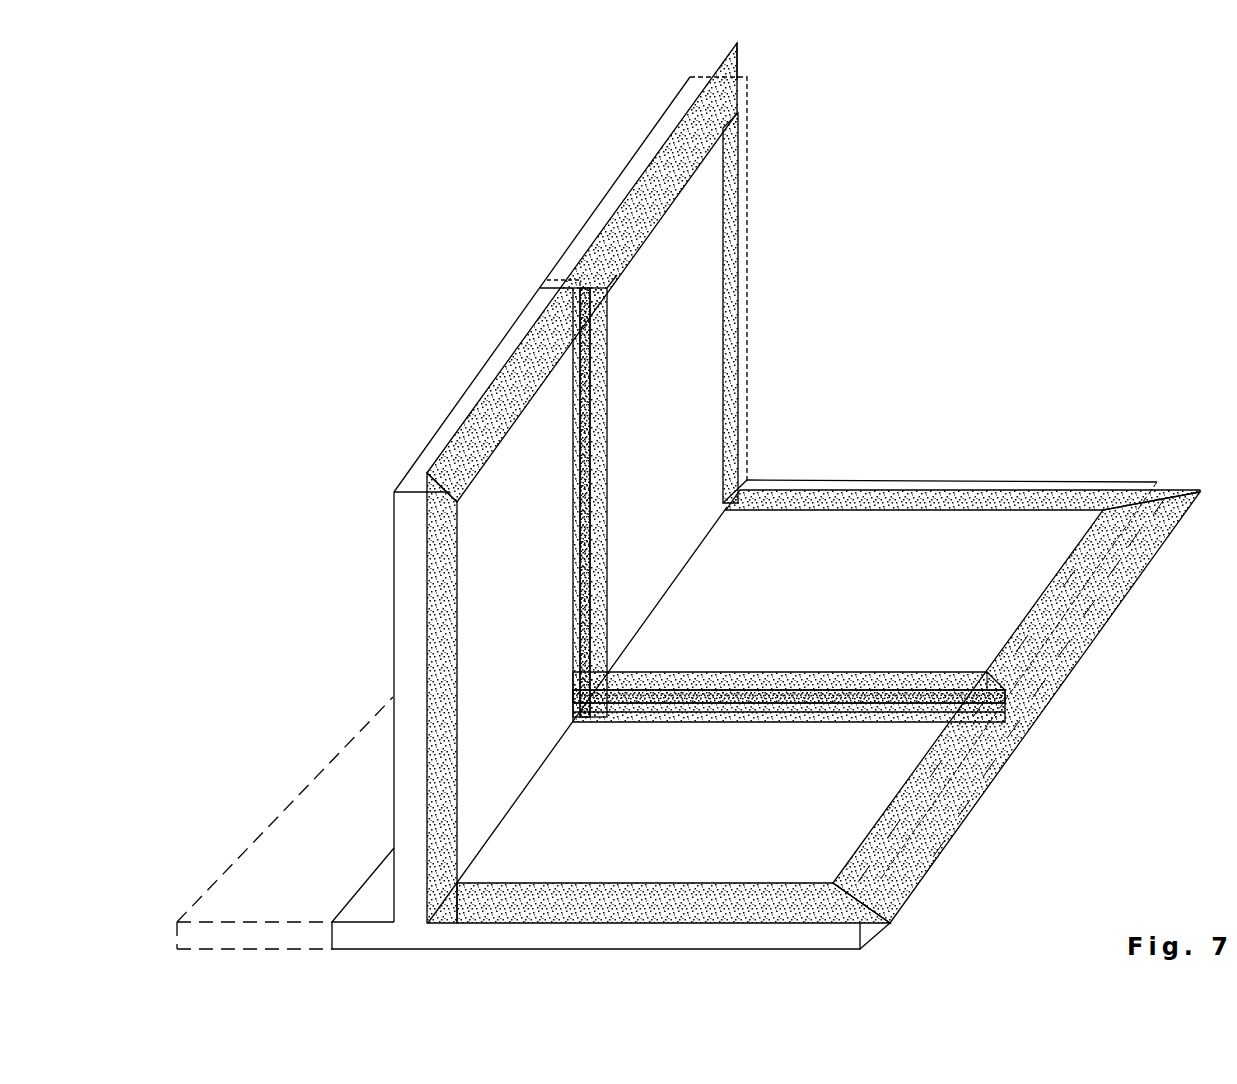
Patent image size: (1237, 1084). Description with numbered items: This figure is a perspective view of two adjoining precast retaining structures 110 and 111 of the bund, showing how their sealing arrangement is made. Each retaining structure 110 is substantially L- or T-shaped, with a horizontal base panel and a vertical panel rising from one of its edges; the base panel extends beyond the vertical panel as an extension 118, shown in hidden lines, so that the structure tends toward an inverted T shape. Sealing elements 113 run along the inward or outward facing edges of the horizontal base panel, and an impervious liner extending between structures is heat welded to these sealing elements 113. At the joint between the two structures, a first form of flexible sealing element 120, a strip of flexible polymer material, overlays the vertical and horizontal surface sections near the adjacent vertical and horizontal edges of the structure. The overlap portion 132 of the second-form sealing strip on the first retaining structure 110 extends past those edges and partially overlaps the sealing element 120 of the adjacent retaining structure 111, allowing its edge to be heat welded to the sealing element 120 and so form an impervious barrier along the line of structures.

The retaining structure 110 is at (934, 402).
The adjacent retaining structure 111 is at (980, 850).
The sealing element 113 is at (1097, 600).
The extension 118 is at (290, 773).
The first form of flexible sealing element 120 is at (578, 460).
The overlap portion 132 is at (583, 302).